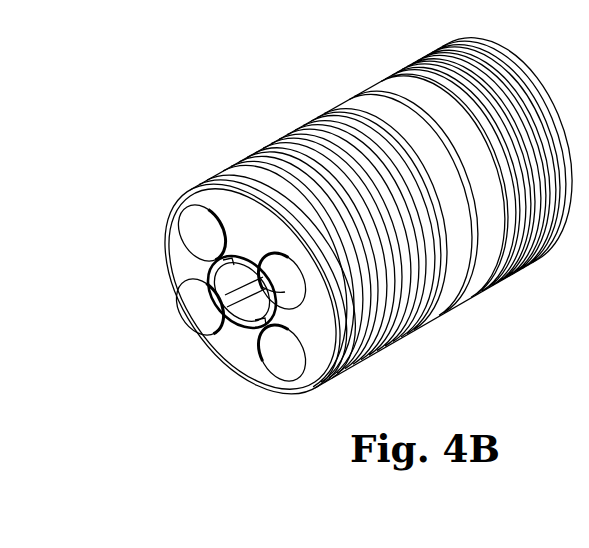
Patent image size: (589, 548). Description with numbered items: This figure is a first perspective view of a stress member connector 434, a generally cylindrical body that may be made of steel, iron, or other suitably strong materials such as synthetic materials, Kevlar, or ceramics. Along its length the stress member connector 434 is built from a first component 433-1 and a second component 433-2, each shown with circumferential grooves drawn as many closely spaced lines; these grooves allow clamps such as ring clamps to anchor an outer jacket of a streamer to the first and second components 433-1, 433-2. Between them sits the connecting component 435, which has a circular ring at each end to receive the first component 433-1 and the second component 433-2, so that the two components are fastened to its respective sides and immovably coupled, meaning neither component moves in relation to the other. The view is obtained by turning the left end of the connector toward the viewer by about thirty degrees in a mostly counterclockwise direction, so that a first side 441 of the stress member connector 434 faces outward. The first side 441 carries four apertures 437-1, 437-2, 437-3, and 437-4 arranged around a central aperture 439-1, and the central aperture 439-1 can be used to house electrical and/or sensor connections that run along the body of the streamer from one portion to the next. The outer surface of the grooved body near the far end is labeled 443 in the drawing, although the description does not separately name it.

The first side 441 is at (233, 222).
The outer surface of core 443 is at (521, 92).
The first component 433-1 is at (397, 343).
The second component 433-2 is at (554, 253).
The stress member connector 434 is at (586, 285).
The connecting component 435 is at (473, 299).
The aperture 437-1 is at (197, 220).
The aperture 437-2 is at (215, 353).
The aperture 437-3 is at (190, 300).
The aperture 437-4 is at (285, 358).
The central aperture 439-1 is at (218, 260).